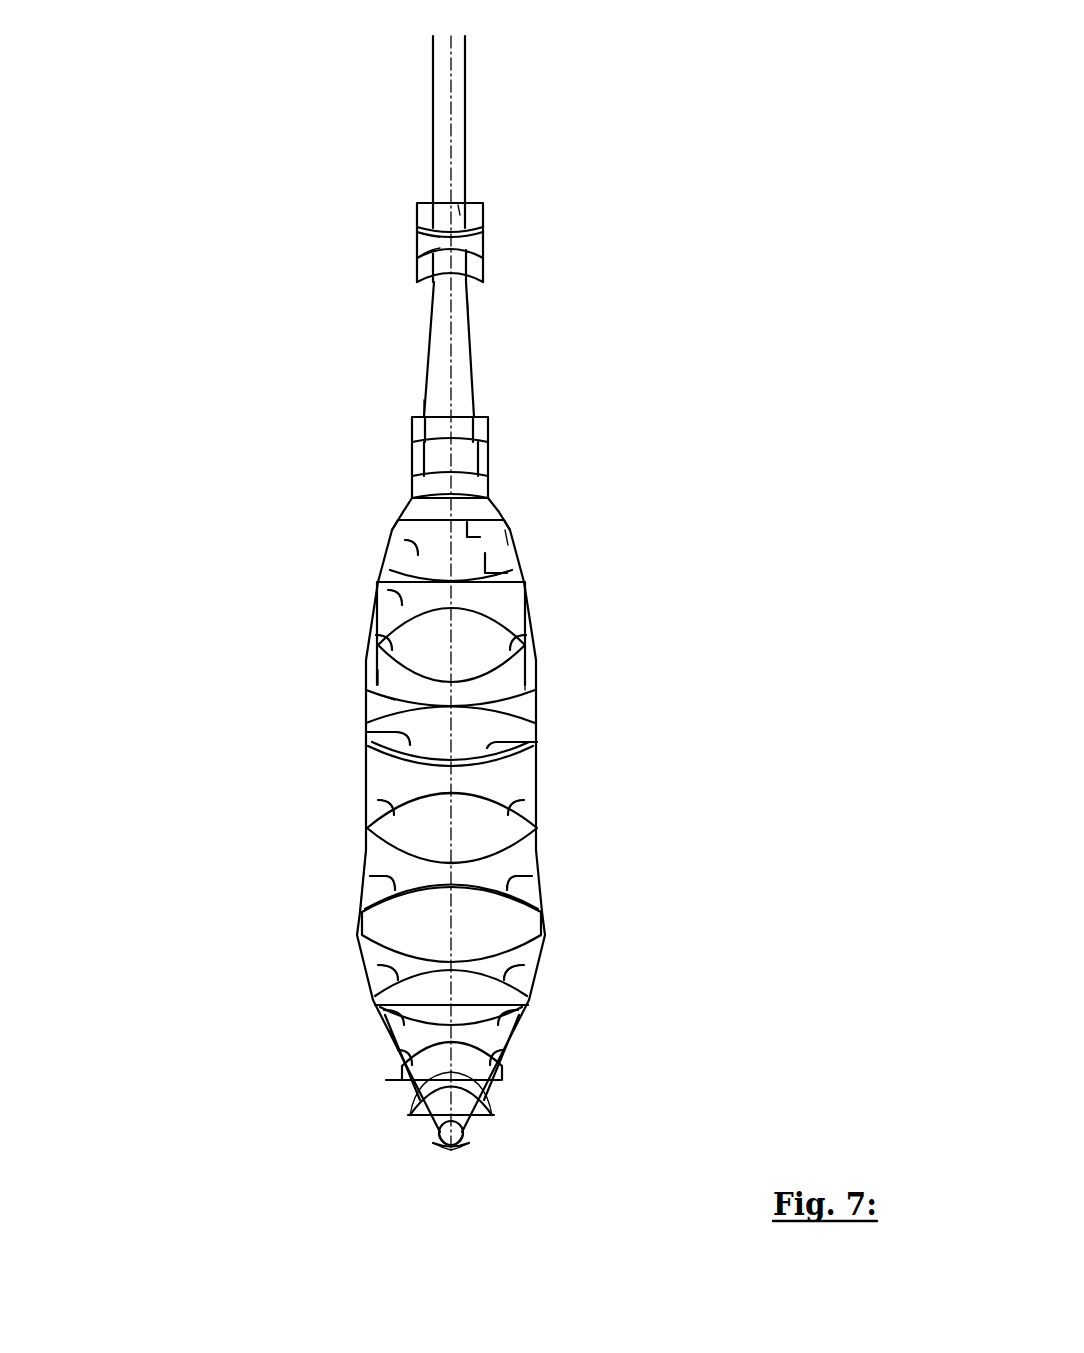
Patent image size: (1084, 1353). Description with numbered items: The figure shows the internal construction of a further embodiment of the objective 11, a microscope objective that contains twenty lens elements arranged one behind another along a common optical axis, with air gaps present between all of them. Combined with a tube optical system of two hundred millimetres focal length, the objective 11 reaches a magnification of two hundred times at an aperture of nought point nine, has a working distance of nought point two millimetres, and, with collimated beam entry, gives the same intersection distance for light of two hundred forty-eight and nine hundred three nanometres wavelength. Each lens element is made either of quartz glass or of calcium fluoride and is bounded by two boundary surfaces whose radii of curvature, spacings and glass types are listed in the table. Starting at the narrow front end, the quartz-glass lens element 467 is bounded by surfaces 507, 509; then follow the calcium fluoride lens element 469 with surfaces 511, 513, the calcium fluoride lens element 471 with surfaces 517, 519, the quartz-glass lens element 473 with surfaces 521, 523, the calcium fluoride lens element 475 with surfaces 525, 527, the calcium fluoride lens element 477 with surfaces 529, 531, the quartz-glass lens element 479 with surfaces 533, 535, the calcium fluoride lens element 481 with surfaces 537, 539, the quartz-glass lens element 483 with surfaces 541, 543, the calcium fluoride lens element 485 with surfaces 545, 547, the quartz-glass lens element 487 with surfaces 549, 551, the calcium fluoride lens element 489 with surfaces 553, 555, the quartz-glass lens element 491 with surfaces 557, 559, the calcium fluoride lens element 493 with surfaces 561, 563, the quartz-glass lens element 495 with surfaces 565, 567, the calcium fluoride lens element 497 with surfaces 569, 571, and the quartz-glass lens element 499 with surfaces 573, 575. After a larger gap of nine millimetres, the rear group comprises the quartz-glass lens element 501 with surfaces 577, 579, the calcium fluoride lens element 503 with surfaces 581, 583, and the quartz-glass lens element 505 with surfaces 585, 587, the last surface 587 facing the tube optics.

The objective 11 is at (178, 327).
The lens element 467 is at (458, 1155).
The lens element 469 is at (430, 1117).
The lens element 471 is at (480, 1080).
The lens element 473 is at (410, 1046).
The lens element 475 is at (520, 1005).
The lens element 477 is at (410, 946).
The lens element 479 is at (528, 880).
The lens element 481 is at (395, 832).
The lens element 483 is at (520, 780).
The lens element 485 is at (405, 742).
The lens element 487 is at (520, 685).
The lens element 489 is at (400, 640).
The lens element 491 is at (515, 600).
The lens element 493 is at (407, 550).
The lens element 495 is at (490, 482).
The lens element 497 is at (415, 461).
The lens element 499 is at (465, 420).
The lens element 501 is at (420, 270).
The lens element 503 is at (484, 250).
The lens element 505 is at (418, 215).
The boundary surface 507 is at (448, 1160).
The boundary surface 509 is at (435, 1142).
The boundary surface 511 is at (470, 1135).
The boundary surface 513 is at (480, 1110).
The boundary surface 517 is at (425, 1096).
The boundary surface 519 is at (415, 1072).
The boundary surface 521 is at (510, 1068).
The boundary surface 523 is at (518, 1035).
The boundary surface 525 is at (410, 1006).
The boundary surface 527 is at (400, 967).
The boundary surface 529 is at (530, 967).
The boundary surface 531 is at (541, 925).
The boundary surface 533 is at (380, 896).
The boundary surface 535 is at (380, 872).
The boundary surface 537 is at (545, 840).
The boundary surface 539 is at (520, 817).
The boundary surface 541 is at (385, 802).
The boundary surface 543 is at (375, 772).
The boundary surface 545 is at (530, 755).
The boundary surface 547 is at (520, 717).
The boundary surface 549 is at (380, 692).
The boundary surface 551 is at (405, 676).
The boundary surface 553 is at (530, 635).
The boundary surface 555 is at (520, 627).
The boundary surface 557 is at (400, 612).
The boundary surface 559 is at (400, 590).
The boundary surface 561 is at (500, 548).
The boundary surface 563 is at (510, 540).
The boundary surface 565 is at (425, 505).
The boundary surface 567 is at (415, 482).
The boundary surface 569 is at (486, 467).
The boundary surface 571 is at (488, 440).
The boundary surface 573 is at (412, 430).
The boundary surface 575 is at (425, 400).
The boundary surface 577 is at (470, 300).
The boundary surface 579 is at (486, 280).
The boundary surface 581 is at (420, 250).
The boundary surface 583 is at (430, 236).
The boundary surface 585 is at (482, 222).
The boundary surface 587 is at (460, 205).